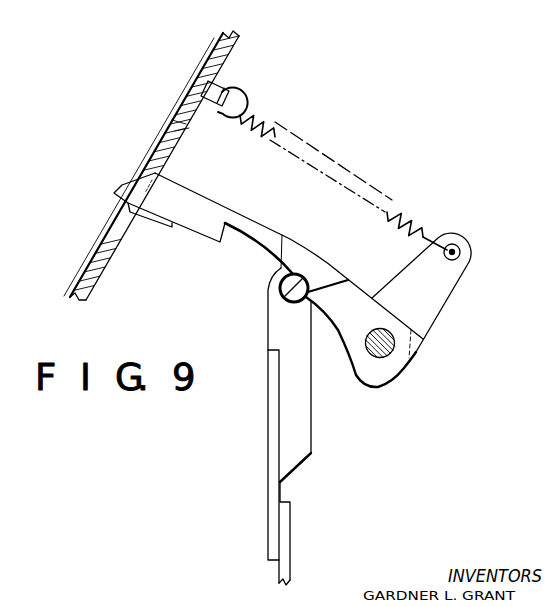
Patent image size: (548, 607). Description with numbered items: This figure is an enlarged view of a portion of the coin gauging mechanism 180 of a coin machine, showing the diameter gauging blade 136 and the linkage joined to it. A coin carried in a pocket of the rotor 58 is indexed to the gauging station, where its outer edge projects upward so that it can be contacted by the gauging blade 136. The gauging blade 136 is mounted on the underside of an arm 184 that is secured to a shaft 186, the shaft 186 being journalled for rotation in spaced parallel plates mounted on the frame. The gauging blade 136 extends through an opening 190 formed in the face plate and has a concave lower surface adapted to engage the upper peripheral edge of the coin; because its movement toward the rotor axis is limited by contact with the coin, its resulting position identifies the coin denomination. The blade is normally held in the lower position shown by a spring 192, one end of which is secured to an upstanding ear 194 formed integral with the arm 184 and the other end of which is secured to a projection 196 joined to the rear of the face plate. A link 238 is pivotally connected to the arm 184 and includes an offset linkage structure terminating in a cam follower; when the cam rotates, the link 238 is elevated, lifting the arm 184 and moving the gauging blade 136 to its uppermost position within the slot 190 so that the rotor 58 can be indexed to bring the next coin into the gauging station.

The rotor 58 is at (103, 240).
The gauging blade 136 is at (122, 185).
The gauging mechanism 180 is at (232, 177).
The arm 184 is at (228, 206).
The shaft 186 is at (387, 358).
The opening 190 is at (174, 125).
The spring 192 is at (273, 120).
The upstanding ear 194 is at (437, 297).
The projection 196 is at (218, 83).
The link 238 is at (295, 441).